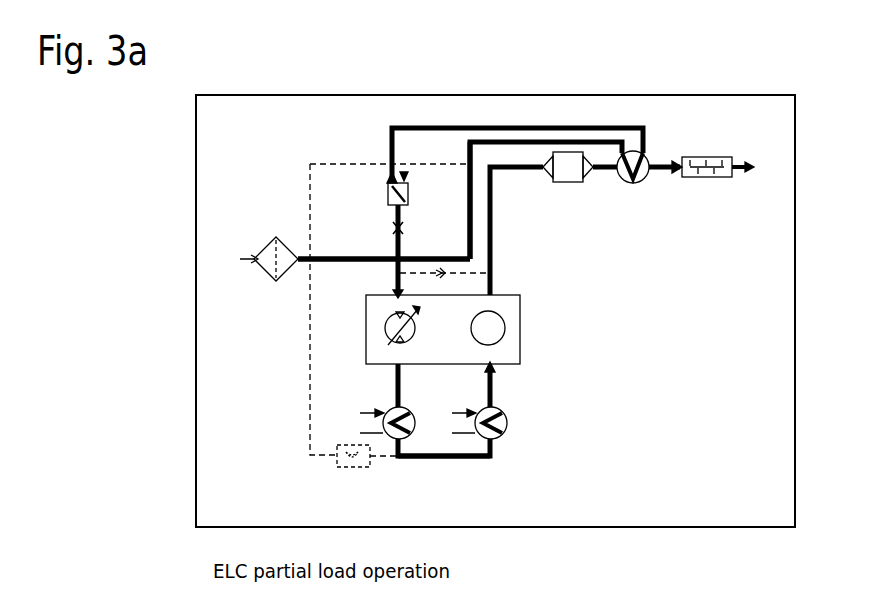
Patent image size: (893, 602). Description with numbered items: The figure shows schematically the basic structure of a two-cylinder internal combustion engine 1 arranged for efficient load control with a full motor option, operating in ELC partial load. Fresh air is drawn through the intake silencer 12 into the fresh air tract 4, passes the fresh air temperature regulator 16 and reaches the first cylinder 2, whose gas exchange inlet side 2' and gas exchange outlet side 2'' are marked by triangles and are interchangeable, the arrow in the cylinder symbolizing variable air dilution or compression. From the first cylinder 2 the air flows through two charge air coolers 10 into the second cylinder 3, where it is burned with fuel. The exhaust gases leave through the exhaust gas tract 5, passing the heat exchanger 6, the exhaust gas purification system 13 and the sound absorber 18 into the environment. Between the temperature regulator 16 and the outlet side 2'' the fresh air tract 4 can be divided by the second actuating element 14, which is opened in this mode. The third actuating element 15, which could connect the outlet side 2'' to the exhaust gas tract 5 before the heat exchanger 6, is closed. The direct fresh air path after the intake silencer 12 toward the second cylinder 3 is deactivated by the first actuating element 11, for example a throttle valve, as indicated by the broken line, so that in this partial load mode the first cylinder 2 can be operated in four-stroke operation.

The internal combustion engine 1 is at (520, 304).
The first cylinder 2 is at (380, 326).
The gas exchange inlet side 2' is at (363, 299).
The gas exchange outlet side 2'' is at (360, 359).
The second cylinder 3 is at (505, 331).
The fresh air tract 4 is at (414, 239).
The exhaust gas tract 5 is at (493, 232).
The heat exchanger 6 is at (633, 185).
The charge air coolers 10 is at (414, 411).
The first actuating element 11 is at (353, 468).
The intake silencer 12 is at (263, 245).
The exhaust gas purification system 13 is at (568, 183).
The second actuating element 14 is at (394, 229).
The third actuating element 15 is at (447, 277).
The fresh air temperature regulator 16 is at (388, 192).
The sound absorber 18 is at (697, 178).